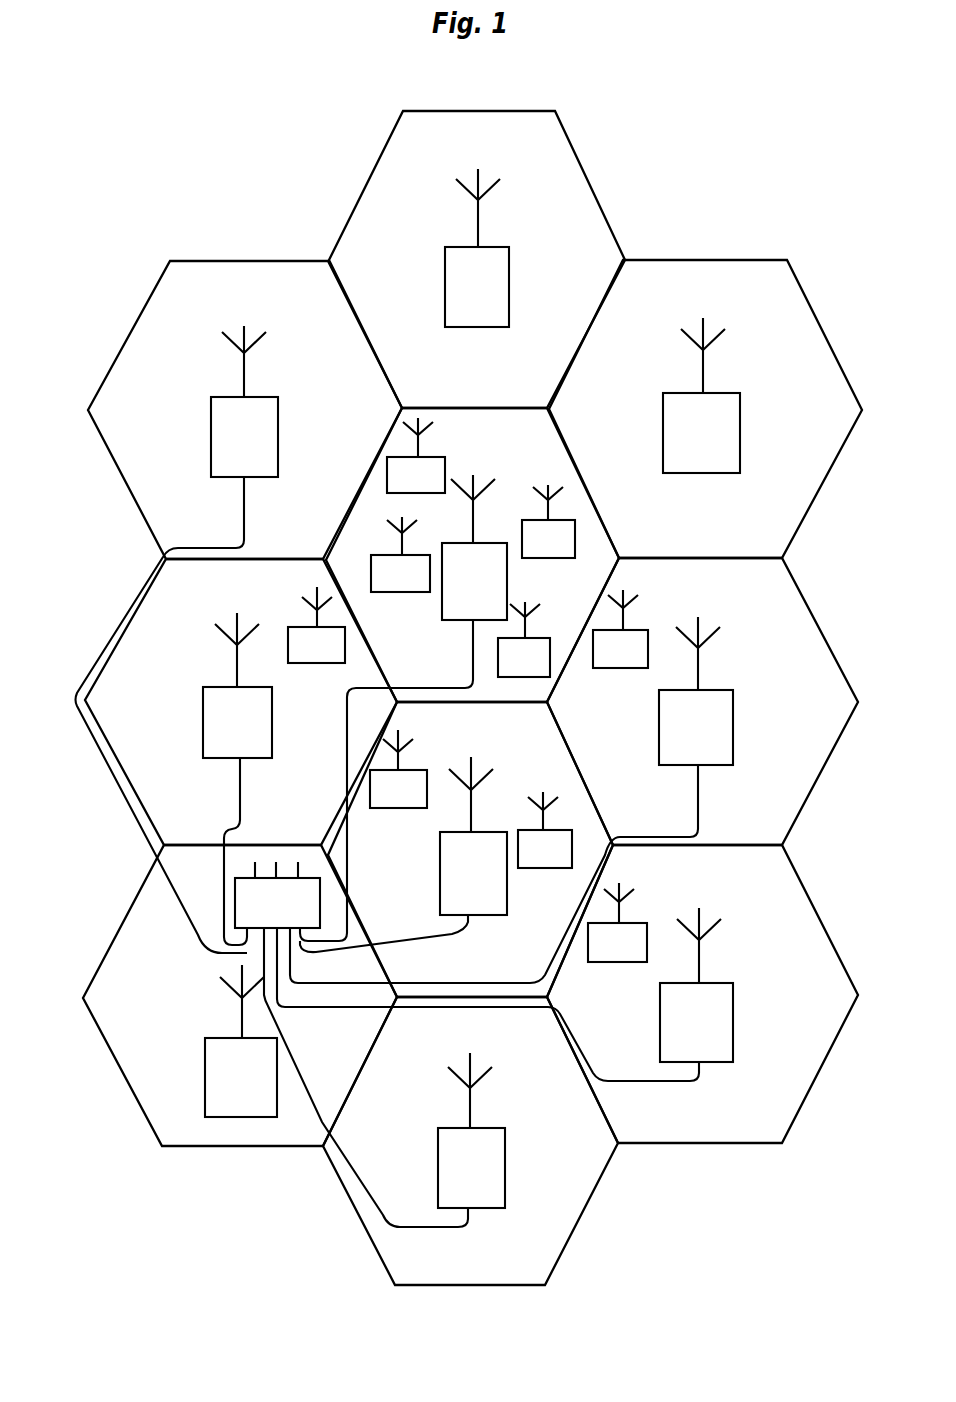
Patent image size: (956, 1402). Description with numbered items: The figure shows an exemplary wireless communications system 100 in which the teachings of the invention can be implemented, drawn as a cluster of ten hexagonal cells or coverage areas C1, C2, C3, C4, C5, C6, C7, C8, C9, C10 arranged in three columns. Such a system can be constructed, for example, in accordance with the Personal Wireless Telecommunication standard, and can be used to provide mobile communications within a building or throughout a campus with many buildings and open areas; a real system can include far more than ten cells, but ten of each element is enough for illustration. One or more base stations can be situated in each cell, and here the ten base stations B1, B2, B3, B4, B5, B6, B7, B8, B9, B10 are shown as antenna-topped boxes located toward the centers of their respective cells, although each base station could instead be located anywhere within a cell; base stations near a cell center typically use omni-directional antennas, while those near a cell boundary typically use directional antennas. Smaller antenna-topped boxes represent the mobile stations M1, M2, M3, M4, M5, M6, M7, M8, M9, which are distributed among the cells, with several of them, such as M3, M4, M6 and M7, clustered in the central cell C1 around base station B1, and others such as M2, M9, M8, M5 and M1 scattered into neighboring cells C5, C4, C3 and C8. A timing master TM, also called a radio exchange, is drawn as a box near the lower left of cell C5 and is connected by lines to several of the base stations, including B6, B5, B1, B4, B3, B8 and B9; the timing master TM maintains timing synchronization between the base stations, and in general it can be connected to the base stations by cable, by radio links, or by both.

The wireless communications system 100 is at (116, 113).
The base station B1 is at (403, 708).
The base station B2 is at (701, 395).
The base station B3 is at (511, 800).
The base station B4 is at (403, 854).
The base station B5 is at (237, 779).
The base station B6 is at (177, 639).
The base station B7 is at (477, 248).
The base station B8 is at (505, 994).
The base station B9 is at (384, 1077).
The base station B10 is at (241, 1041).
The mobile station M1 is at (617, 922).
The mobile station M2 is at (316, 625).
The mobile station M3 is at (400, 554).
The mobile station M4 is at (548, 521).
The mobile station M5 is at (620, 629).
The mobile station M6 is at (416, 455).
The mobile station M7 is at (524, 639).
The mobile station M8 is at (545, 830).
The mobile station M9 is at (398, 769).
The cell C1 is at (435, 679).
The cell C2 is at (653, 541).
The cell C3 is at (648, 824).
The cell C4 is at (430, 972).
The cell C5 is at (198, 830).
The cell C6 is at (201, 539).
The cell C7 is at (441, 396).
The cell C8 is at (650, 1122).
The cell C9 is at (428, 1269).
The cell C10 is at (210, 1141).
The timing master TM is at (277, 895).